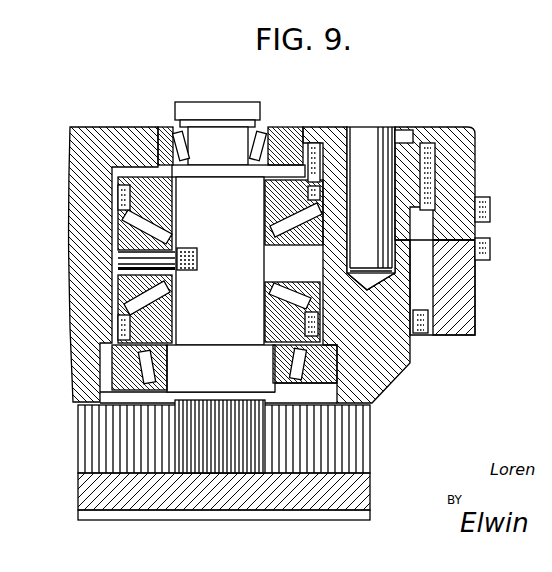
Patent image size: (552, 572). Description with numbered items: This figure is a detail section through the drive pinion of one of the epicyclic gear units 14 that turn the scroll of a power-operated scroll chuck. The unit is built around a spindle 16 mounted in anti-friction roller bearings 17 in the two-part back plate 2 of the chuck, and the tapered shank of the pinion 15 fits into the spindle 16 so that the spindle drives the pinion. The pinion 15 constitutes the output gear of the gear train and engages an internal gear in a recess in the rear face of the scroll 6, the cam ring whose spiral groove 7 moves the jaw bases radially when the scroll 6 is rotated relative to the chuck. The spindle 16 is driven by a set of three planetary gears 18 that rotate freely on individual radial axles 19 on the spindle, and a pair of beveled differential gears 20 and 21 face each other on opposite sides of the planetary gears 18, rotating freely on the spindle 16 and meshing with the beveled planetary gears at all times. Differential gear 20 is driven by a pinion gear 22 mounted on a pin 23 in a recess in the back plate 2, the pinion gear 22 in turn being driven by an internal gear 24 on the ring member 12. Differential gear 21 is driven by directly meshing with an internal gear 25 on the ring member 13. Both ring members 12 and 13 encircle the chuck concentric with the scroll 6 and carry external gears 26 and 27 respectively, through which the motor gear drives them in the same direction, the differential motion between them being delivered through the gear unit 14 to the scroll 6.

The back plate 2 is at (68, 181).
The scroll 6 is at (78, 492).
The scroll groove 7 is at (212, 512).
The ring member 12 is at (477, 172).
The ring member 13 is at (477, 305).
The epicyclic gear unit 14 is at (115, 311).
The pinion 15 is at (178, 434).
The spindle 16 is at (236, 247).
The anti-friction roller bearings 17 is at (177, 143).
The planetary gears 18 is at (120, 237).
The radial axles 19 is at (135, 262).
The differential gear 20 is at (296, 224).
The differential gear 21 is at (303, 292).
The pinion gear 22 is at (326, 126).
The pin 23 is at (377, 133).
The internal gear 24 is at (428, 152).
The internal gear 25 is at (428, 322).
The external gear 26 is at (493, 208).
The external gear 27 is at (493, 248).